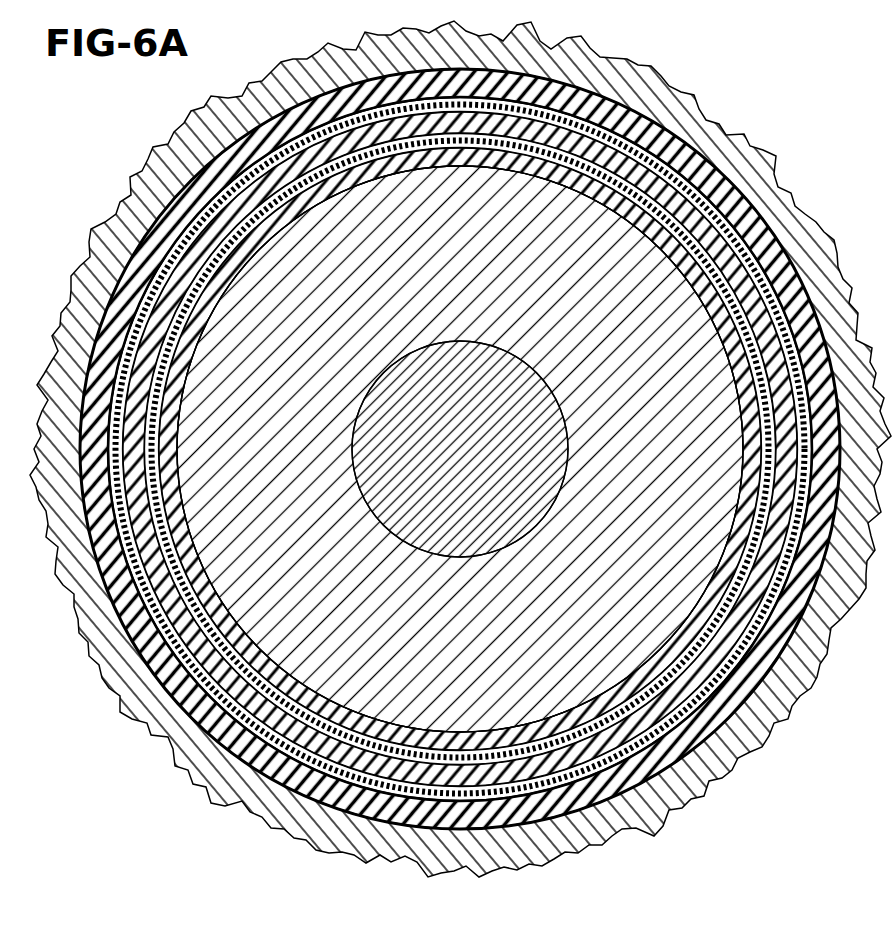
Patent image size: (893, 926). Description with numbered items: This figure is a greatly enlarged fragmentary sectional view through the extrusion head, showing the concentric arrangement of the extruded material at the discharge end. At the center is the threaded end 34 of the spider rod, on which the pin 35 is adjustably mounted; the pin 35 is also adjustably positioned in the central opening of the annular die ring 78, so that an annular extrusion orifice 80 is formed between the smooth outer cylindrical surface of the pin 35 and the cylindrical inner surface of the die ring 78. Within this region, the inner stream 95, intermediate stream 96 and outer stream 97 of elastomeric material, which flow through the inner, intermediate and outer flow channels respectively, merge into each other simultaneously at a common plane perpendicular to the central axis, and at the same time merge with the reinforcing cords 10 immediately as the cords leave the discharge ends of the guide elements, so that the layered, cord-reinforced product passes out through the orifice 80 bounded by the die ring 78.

The reinforcing cords 10 is at (405, 757).
The threaded end 34 is at (448, 463).
The pin 35 is at (594, 603).
The die ring 78 is at (743, 753).
The annular extrusion orifice 80 is at (598, 802).
The inner stream 95 is at (298, 693).
The intermediate stream 96 is at (250, 707).
The outer stream 97 is at (745, 700).